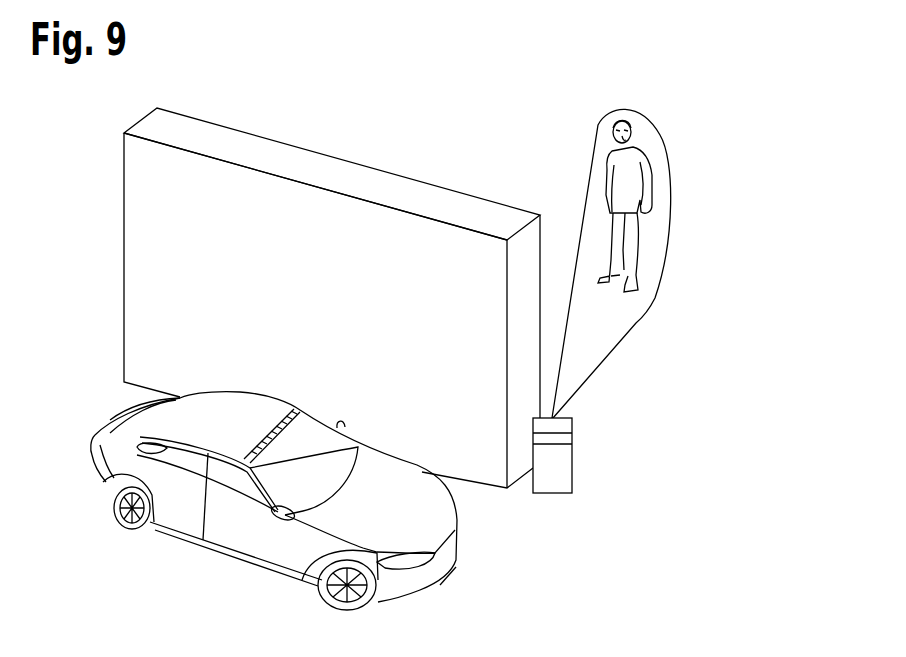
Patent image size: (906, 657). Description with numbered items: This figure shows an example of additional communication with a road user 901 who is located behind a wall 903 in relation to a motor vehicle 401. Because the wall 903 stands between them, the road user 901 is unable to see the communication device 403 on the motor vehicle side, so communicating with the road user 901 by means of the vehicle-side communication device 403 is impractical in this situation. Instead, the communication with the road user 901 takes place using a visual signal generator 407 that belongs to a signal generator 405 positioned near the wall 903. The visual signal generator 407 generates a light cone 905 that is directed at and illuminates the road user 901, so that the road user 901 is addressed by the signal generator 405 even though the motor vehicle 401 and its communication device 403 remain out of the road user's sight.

The motor vehicle 401 is at (241, 514).
The communication device 403 is at (133, 447).
The signal generator 405 is at (572, 476).
The visual signal generator 407 is at (558, 438).
The road user 901 is at (637, 165).
The wall 903 is at (403, 193).
The light cone 905 is at (673, 233).